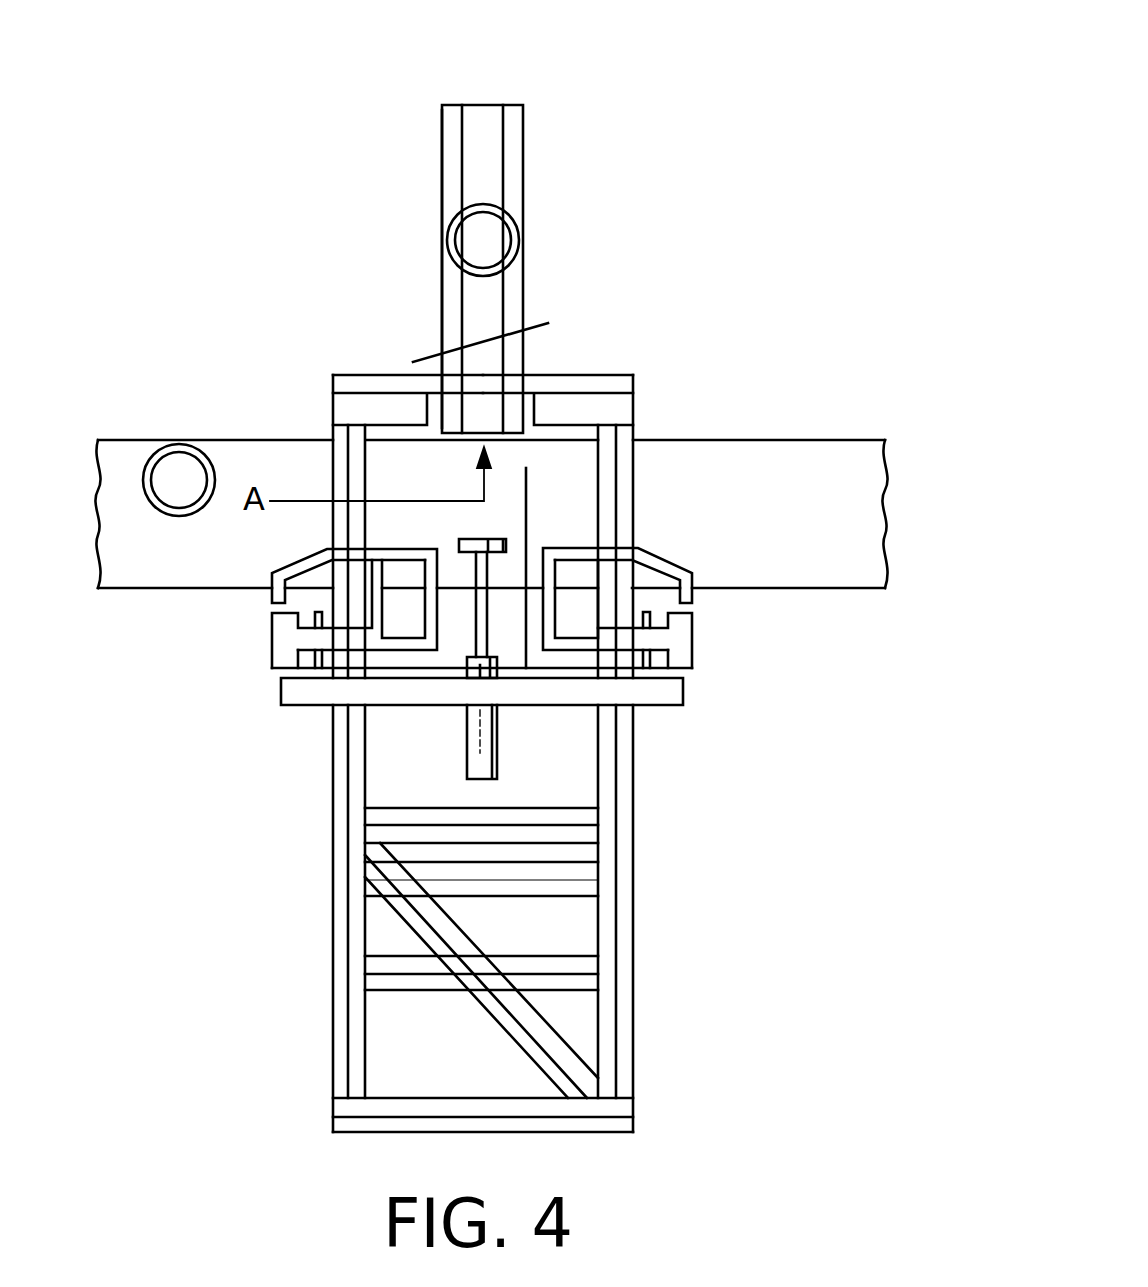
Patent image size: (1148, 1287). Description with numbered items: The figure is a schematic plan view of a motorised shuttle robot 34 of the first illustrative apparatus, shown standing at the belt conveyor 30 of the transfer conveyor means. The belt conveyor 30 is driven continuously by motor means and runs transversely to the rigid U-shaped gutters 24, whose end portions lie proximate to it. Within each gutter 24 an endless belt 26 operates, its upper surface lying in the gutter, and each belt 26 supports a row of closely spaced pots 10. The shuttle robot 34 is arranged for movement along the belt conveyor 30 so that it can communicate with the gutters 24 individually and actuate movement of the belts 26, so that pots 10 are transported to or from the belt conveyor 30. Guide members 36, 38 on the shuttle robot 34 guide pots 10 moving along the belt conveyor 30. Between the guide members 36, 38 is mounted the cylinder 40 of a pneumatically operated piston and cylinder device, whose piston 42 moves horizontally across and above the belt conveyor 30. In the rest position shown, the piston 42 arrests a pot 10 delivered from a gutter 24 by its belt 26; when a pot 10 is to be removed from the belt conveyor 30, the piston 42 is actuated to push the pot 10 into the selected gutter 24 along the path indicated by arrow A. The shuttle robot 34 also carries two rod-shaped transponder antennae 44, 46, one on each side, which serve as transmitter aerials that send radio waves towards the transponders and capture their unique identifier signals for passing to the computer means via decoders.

The pot 10 is at (181, 445).
The gutter 24 is at (403, 237).
The endless belt 26 is at (487, 105).
The belt conveyor 30 is at (775, 480).
The shuttle robot 34 is at (685, 1005).
The guide member 36 is at (665, 562).
The guide member 38 is at (272, 638).
The cylinder 40 is at (500, 738).
The piston 42 is at (490, 617).
The transponder antenna 44 is at (597, 405).
The transponder antenna 46 is at (373, 405).